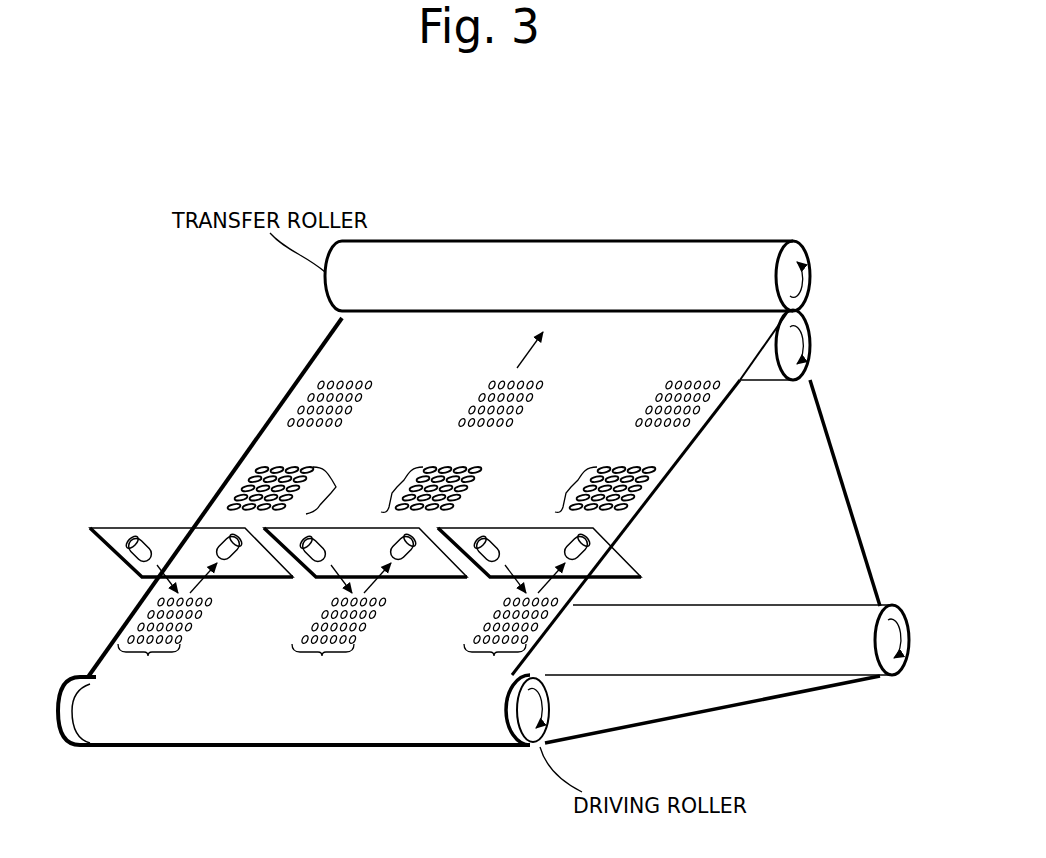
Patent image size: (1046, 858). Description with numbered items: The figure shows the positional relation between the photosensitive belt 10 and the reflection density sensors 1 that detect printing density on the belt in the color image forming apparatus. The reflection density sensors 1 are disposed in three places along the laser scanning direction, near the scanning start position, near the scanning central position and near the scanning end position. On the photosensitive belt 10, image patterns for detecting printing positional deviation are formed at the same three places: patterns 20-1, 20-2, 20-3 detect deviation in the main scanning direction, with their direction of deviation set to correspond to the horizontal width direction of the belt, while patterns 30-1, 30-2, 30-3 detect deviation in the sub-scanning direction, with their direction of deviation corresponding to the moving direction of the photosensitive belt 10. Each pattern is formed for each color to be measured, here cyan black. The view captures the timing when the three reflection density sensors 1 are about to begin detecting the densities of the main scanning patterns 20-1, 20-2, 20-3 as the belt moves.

The photosensitive belt 10 is at (312, 368).
The reflection density sensor 1 is at (160, 528).
The pattern for detection of printing positional deviation in sub-scanning direction 30-1 is at (567, 487).
The pattern for detection of printing positional deviation in sub-scanning direction 30-2 is at (397, 487).
The pattern for detection of printing positional deviation in sub-scanning direction 30-3 is at (336, 487).
The pattern for detection of printing positional deviation in main scanning directio 20-1 is at (497, 656).
The pattern for detection of printing positional deviation in main scanning directio 20-2 is at (322, 656).
The pattern for detection of printing positional deviation in main scanning directio 20-3 is at (148, 656).